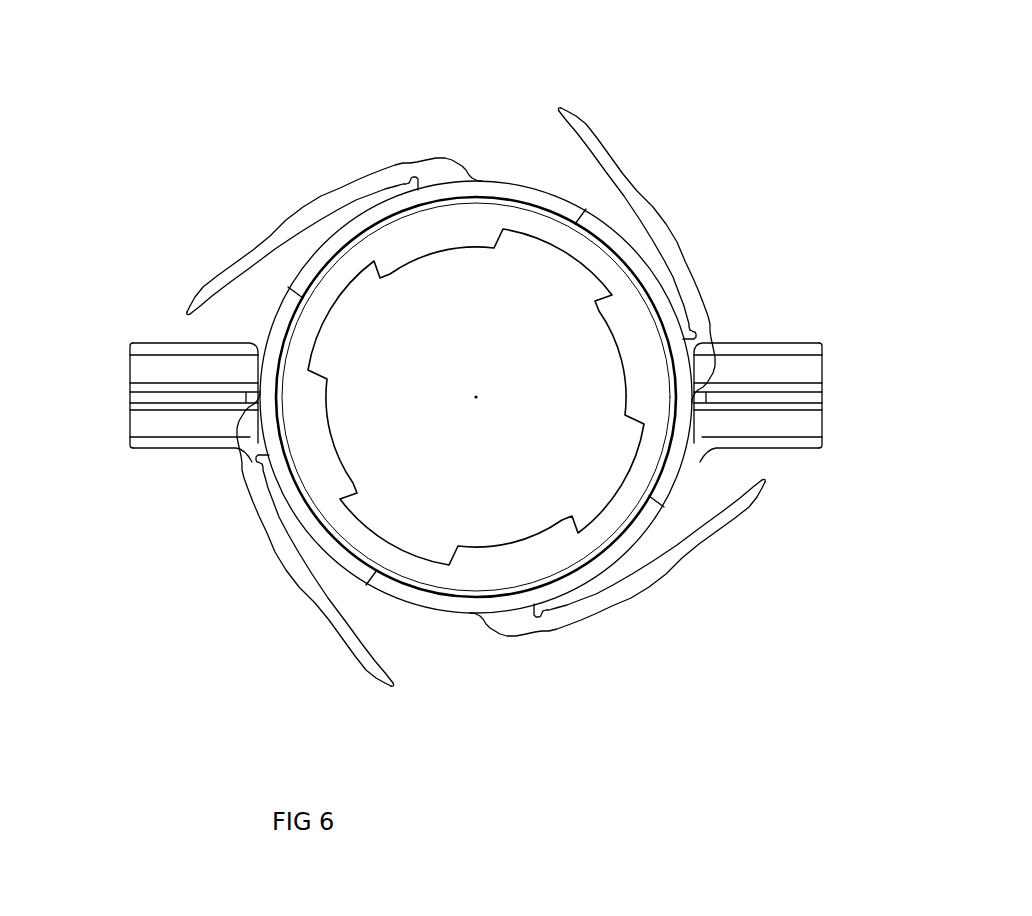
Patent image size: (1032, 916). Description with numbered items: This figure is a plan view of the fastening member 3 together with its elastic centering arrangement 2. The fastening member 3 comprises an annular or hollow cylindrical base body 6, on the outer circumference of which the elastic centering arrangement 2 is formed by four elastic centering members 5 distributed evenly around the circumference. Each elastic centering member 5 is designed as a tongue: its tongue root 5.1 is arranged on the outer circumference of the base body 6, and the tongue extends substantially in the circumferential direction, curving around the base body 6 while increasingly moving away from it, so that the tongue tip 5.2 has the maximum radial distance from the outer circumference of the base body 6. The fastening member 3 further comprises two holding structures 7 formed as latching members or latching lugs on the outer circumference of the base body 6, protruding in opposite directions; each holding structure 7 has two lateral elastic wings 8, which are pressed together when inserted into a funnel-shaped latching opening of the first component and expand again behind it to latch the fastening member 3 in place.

The elastic centering arrangement 2 is at (347, 169).
The fastening member 3 is at (694, 103).
The elastic centering member 5 is at (290, 216).
The tongue root 5.1 is at (437, 172).
The tongue tip 5.2 is at (187, 308).
The base body 6 is at (650, 292).
The holding structure 7 is at (130, 398).
The lateral elastic wing 8 is at (130, 348).